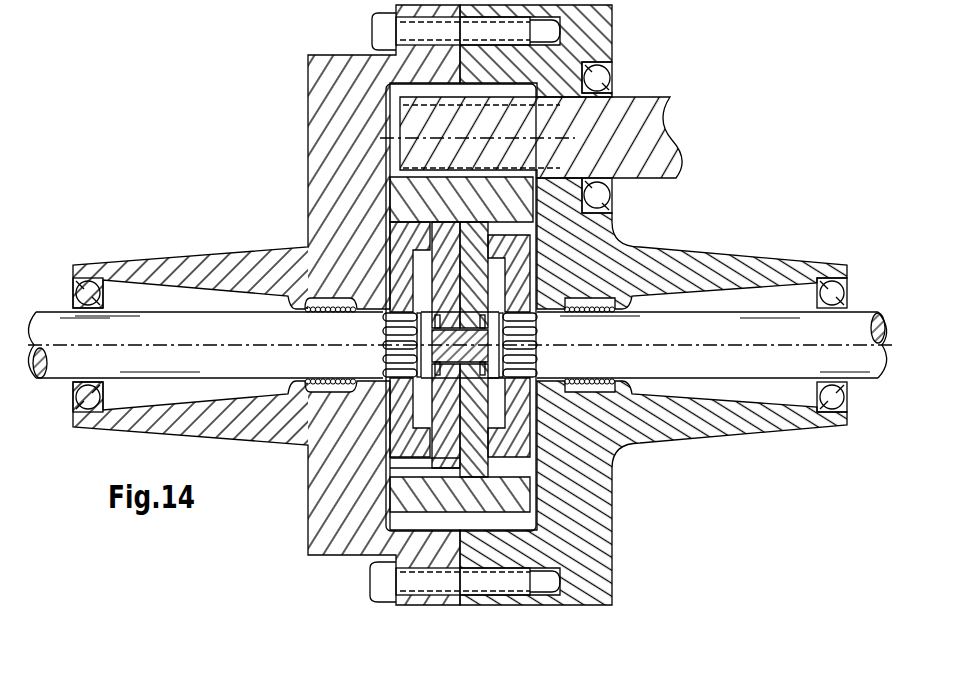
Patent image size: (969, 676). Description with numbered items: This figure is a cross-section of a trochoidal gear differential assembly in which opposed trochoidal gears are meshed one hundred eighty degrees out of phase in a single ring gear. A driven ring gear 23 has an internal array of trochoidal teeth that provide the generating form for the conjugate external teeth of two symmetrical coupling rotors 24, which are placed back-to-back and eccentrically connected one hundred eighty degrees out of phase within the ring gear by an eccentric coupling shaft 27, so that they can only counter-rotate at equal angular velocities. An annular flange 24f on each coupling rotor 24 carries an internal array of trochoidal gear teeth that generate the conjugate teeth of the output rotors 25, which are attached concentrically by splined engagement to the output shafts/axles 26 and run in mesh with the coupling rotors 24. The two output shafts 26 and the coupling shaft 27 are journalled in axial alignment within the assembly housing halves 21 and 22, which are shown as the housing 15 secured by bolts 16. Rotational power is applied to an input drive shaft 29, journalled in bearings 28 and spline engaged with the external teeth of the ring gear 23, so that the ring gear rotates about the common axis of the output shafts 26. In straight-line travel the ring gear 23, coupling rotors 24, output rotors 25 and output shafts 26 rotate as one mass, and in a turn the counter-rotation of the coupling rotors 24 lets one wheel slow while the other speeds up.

The housing half 15 is at (535, 86).
The bolt 16 is at (390, 62).
The assembly housing half 21 is at (147, 272).
The assembly housing half 22 is at (778, 270).
The driven ring gear 23 is at (423, 203).
The coupling rotor 24 is at (413, 229).
The annular flange 24f is at (418, 448).
The output rotor 25 is at (388, 273).
The output shaft/axle 26 is at (223, 328).
The eccentric coupling shaft 27 is at (530, 357).
The bearing 28 is at (601, 80).
The input drive shaft 29 is at (415, 130).